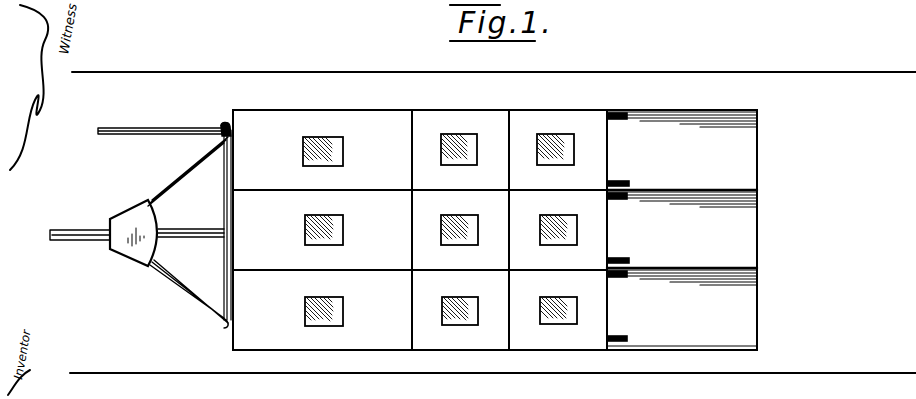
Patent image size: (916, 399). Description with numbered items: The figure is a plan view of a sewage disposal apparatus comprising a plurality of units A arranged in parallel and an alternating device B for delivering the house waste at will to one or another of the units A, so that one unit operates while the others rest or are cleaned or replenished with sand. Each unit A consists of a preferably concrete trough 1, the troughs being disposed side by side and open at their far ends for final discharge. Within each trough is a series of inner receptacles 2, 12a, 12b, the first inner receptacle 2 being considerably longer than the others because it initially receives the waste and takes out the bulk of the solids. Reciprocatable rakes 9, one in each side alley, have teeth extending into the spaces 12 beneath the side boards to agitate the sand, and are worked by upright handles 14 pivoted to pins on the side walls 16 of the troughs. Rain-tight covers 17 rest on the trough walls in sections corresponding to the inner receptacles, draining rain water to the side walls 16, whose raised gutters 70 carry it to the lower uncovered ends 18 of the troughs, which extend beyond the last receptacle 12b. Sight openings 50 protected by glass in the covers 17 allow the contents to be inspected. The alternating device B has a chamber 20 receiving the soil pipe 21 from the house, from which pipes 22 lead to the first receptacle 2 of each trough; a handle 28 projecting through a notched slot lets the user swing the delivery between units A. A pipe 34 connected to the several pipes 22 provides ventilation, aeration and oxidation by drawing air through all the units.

The trough 1 is at (238, 173).
The first inner receptacle 2 is at (36, 252).
The reciprocatable rake 9 is at (612, 120).
The space 12 is at (303, 353).
The second inner receptacle 12a is at (455, 352).
The last inner receptacle 12b is at (551, 352).
The upright handle 14 is at (618, 181).
The side wall 16 is at (720, 111).
The rain-tight cover 17 is at (284, 133).
The lower uncovered end 18 is at (742, 162).
The chamber 20 is at (118, 254).
The soil pipe 21 is at (86, 243).
The pipe 22 is at (192, 183).
The handle 28 is at (173, 233).
The ventilating pipe 34 is at (139, 128).
The sight opening 50 is at (346, 153).
The raised gutter 70 is at (760, 190).
The unit A is at (480, 241).
The alternating device B is at (124, 212).